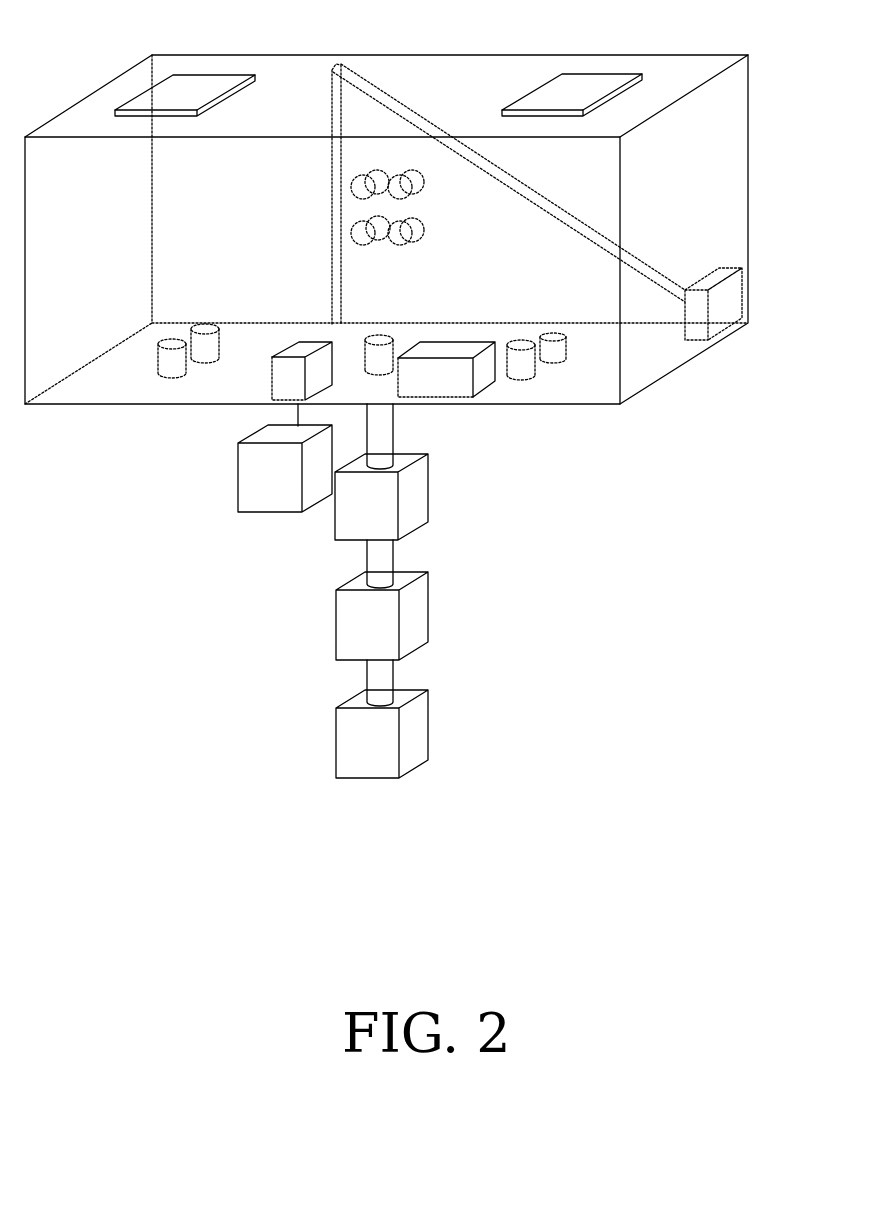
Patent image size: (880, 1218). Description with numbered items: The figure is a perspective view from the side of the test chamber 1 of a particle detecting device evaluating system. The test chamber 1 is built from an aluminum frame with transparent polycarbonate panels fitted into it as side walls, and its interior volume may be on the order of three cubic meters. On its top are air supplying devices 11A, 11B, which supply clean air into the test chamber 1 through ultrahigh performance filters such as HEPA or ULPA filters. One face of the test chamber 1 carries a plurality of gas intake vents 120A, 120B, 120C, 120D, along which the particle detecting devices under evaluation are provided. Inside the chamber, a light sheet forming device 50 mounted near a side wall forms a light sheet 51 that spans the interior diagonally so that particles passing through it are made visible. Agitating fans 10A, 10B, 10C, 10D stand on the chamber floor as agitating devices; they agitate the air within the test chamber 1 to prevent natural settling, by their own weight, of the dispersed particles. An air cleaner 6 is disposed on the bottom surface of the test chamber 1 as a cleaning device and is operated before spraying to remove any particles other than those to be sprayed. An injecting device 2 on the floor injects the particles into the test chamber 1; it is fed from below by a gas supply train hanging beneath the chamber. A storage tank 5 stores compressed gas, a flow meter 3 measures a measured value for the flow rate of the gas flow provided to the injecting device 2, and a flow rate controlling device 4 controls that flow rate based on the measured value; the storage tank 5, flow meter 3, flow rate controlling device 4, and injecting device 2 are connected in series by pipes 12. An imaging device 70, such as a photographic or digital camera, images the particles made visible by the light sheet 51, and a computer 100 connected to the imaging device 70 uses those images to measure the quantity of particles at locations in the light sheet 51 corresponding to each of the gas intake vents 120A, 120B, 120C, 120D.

The test chamber 1 is at (735, 135).
The injecting device 2 is at (390, 355).
The flow meter 3 is at (437, 620).
The flow rate controlling device 4 is at (327, 535).
The storage tank 5 is at (437, 740).
The air cleaner 6 is at (485, 373).
The pipes 12 is at (394, 442).
The light sheet forming device 50 is at (733, 302).
The light sheet 51 is at (552, 246).
The imaging device 70 is at (290, 383).
The computer 100 is at (253, 487).
The agitating fan 10A is at (216, 342).
The agitating fan 10B is at (170, 344).
The agitating fan 10C is at (560, 337).
The agitating fan 10D is at (522, 355).
The air supplying device 11A is at (196, 88).
The air supplying device 11B is at (573, 88).
The gas intake vent 120A is at (356, 190).
The gas intake vent 120B is at (357, 237).
The gas intake vent 120C is at (402, 188).
The gas intake vent 120D is at (402, 236).